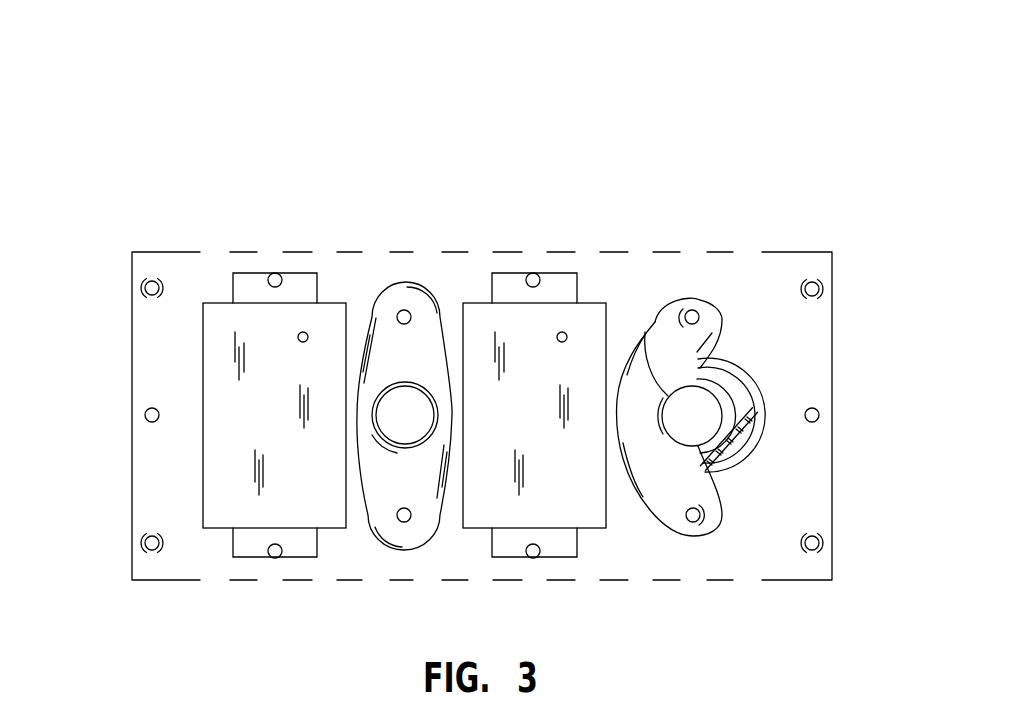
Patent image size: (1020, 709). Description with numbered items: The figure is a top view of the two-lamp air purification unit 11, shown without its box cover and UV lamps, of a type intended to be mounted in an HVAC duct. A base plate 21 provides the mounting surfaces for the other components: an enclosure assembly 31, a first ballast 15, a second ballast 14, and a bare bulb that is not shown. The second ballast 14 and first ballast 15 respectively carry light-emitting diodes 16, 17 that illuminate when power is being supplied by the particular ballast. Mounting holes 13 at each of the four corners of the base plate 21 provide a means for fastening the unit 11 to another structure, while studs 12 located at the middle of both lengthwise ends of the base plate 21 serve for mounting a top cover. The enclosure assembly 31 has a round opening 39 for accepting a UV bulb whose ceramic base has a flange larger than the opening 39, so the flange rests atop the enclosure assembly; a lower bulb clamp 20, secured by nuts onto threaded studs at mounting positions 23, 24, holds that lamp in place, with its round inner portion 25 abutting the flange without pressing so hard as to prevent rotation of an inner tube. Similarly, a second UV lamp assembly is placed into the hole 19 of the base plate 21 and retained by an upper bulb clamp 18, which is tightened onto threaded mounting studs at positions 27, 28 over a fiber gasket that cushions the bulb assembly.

The two-lamp air purification unit 11 is at (773, 117).
The stud 12 is at (145, 414).
The mounting hole 13 is at (143, 543).
The second ballast 14 is at (213, 300).
The first ballast 15 is at (472, 303).
The light-emitting diode 16 is at (305, 331).
The light-emitting diode 17 is at (562, 331).
The upper bulb clamp 18 is at (397, 402).
The hole 19 is at (404, 448).
The lower bulb clamp 20 is at (751, 417).
The base plate 21 is at (145, 252).
The mounting position 23 is at (690, 305).
The mounting position 24 is at (693, 523).
The round inner portion 25 is at (643, 332).
The mounting stud position 27 is at (400, 310).
The mounting stud position 28 is at (404, 523).
The enclosure assembly 31 is at (745, 452).
The round opening 39 is at (692, 447).